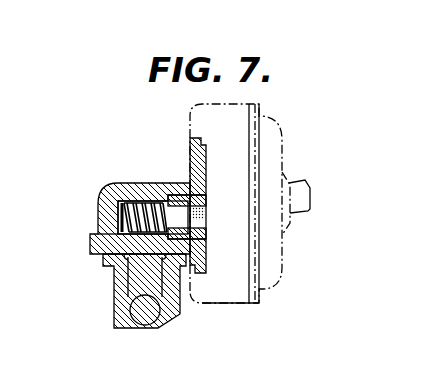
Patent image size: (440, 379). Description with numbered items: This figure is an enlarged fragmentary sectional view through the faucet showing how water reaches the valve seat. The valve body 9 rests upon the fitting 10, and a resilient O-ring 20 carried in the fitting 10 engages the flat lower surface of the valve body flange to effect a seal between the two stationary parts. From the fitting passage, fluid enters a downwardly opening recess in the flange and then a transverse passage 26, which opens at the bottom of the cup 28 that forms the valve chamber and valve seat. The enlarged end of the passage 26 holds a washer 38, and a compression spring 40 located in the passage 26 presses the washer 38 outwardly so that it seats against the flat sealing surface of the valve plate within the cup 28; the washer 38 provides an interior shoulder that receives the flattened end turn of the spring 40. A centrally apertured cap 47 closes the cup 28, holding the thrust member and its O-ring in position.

The valve body 9 is at (98, 209).
The transverse passage 26 is at (136, 201).
The compression spring 40 is at (120, 222).
The washer 38 is at (186, 197).
The O-ring 20 is at (121, 259).
The fitting 10 is at (118, 283).
The cap 47 is at (283, 268).
The cup 28 is at (230, 303).